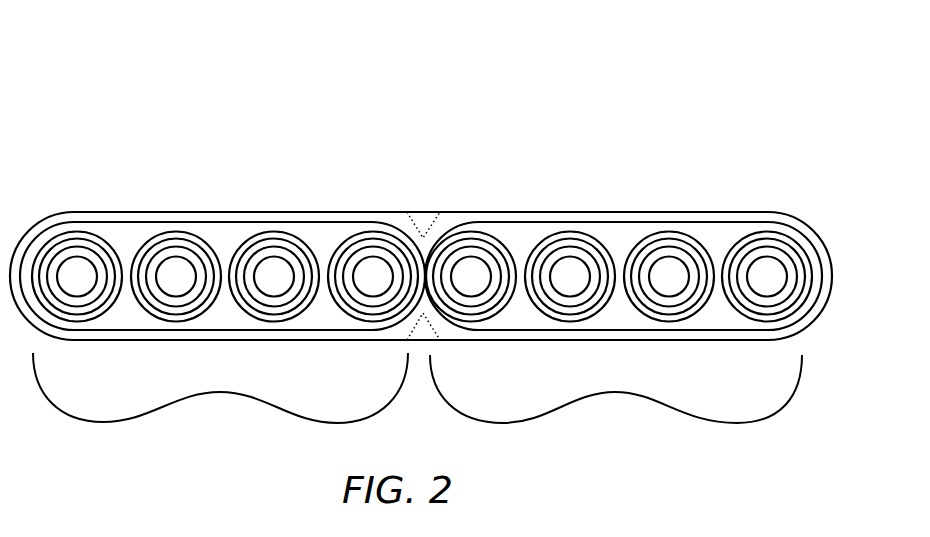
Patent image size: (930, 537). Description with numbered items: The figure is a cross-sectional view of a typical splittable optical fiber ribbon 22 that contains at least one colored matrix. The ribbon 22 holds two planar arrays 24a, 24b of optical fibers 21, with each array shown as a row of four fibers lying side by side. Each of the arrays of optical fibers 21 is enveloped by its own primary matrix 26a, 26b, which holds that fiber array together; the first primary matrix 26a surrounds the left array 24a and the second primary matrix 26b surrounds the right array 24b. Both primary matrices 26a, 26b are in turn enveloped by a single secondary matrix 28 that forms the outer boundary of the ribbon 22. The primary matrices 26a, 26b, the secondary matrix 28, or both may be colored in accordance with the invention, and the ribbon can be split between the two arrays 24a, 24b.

The splittable optical fiber ribbon 22 is at (500, 163).
The secondary matrix 28 is at (88, 217).
The primary matrix 26a is at (324, 240).
The primary matrix 26b is at (626, 242).
The optical fiber 21 is at (182, 272).
The planar array of optical fibers 24a is at (220, 392).
The planar array of optical fibers 24b is at (615, 392).